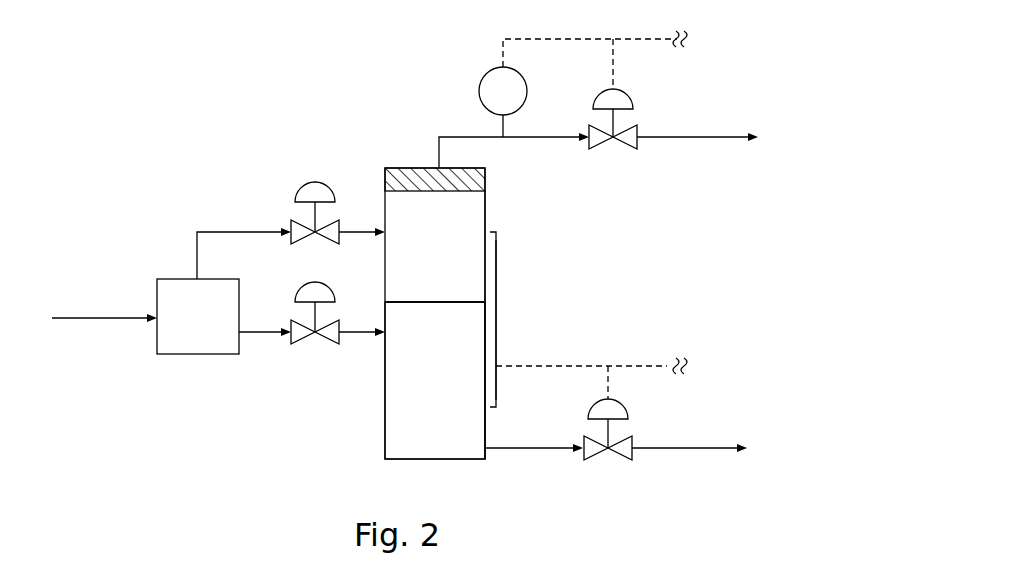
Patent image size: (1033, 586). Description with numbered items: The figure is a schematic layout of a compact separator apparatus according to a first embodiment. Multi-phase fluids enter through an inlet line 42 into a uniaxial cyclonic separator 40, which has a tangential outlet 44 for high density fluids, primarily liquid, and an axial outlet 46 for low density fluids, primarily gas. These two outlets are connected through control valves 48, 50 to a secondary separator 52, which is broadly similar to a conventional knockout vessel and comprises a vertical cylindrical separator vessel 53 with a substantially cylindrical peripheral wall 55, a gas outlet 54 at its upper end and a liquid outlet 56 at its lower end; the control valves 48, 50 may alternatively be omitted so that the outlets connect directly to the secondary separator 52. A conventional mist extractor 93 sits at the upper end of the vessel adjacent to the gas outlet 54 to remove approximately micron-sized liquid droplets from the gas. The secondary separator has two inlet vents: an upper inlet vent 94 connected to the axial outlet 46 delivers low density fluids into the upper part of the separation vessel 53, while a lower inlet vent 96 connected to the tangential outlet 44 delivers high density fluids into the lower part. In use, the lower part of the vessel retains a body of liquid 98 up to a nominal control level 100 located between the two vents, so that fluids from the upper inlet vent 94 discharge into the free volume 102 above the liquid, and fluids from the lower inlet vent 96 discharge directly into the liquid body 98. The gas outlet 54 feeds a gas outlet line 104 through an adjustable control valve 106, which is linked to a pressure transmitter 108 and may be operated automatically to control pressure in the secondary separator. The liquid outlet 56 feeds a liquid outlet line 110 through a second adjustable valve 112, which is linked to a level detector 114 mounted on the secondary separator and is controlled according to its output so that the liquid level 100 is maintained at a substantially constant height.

The uniaxial cyclonic separator 40 is at (192, 360).
The inlet line 42 is at (98, 325).
The tangential outlet 44 is at (255, 337).
The axial outlet 46 is at (196, 255).
The control valve 48 is at (300, 288).
The control valve 50 is at (302, 190).
The secondary separator 52 is at (385, 445).
The separator vessel 53 is at (485, 338).
The gas outlet 54 is at (432, 150).
The peripheral wall 55 is at (485, 259).
The liquid outlet 56 is at (550, 455).
The mist extractor 93 is at (480, 180).
The upper inlet vent 94 is at (363, 230).
The lower inlet vent 96 is at (358, 337).
The body of liquid 98 is at (420, 385).
The nominal control level 100 is at (408, 299).
The free volume 102 is at (417, 240).
The gas outlet line 104 is at (720, 138).
The adjustable control valve 106 is at (630, 90).
The pressure transmitter 108 is at (480, 73).
The liquid outlet line 110 is at (710, 448).
The second adjustable valve 112 is at (625, 408).
The level detector 114 is at (503, 296).